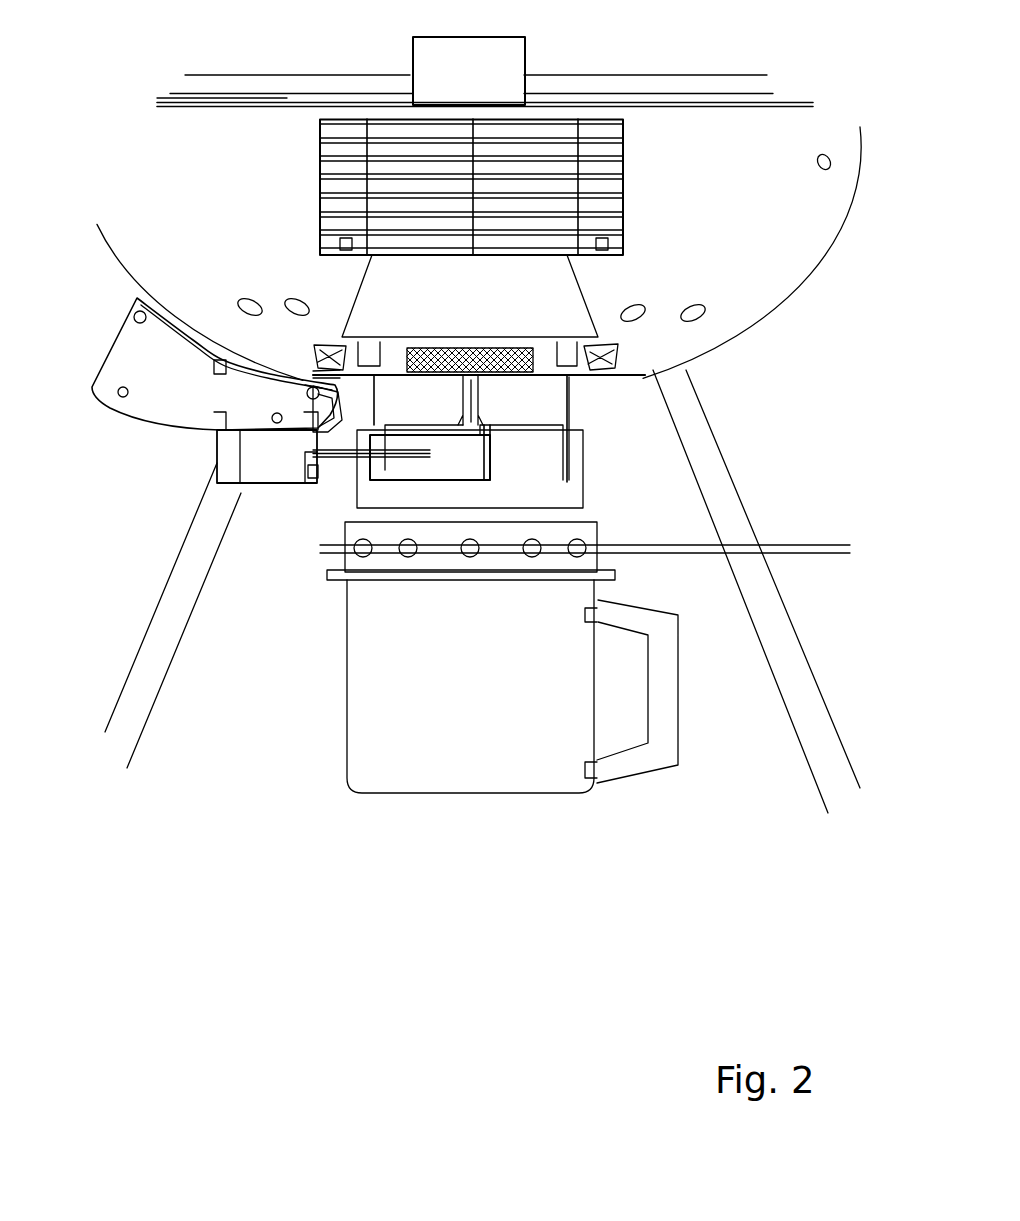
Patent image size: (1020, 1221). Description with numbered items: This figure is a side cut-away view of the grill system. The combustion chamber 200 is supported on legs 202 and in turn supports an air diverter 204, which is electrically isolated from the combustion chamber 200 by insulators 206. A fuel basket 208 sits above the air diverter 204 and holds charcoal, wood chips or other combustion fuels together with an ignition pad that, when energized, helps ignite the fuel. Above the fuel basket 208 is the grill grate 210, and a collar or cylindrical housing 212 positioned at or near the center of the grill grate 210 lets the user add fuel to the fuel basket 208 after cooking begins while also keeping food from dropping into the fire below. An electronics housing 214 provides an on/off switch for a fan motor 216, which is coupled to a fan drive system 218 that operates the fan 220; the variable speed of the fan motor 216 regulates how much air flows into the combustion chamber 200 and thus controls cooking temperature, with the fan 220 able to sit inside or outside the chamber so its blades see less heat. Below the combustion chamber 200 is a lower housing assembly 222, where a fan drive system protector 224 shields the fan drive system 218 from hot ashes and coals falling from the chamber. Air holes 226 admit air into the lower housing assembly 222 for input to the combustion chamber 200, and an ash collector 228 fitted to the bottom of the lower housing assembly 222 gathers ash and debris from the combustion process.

The combustion chamber 200 is at (843, 220).
The legs 202 is at (688, 389).
The air diverter 204 is at (360, 300).
The insulators 206 is at (606, 372).
The fuel basket 208 is at (625, 227).
The grill grate 210 is at (318, 74).
The collar or cylindrical housing 212 is at (527, 60).
The electronics housing 214 is at (113, 342).
The fan motor 216 is at (255, 445).
The fan drive system 218 is at (560, 463).
The fan 220 is at (448, 352).
The lower housing assembly 222 is at (337, 488).
The fan drive system protector 224 is at (530, 483).
The air holes 226 is at (532, 558).
The ash collector 228 is at (347, 663).